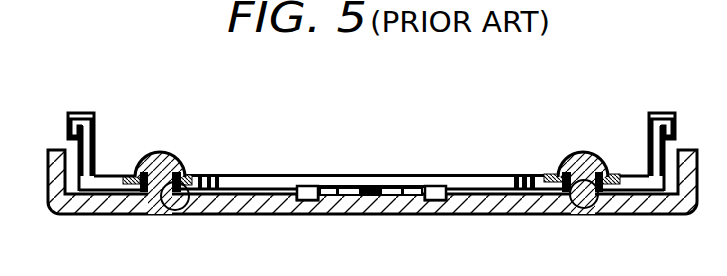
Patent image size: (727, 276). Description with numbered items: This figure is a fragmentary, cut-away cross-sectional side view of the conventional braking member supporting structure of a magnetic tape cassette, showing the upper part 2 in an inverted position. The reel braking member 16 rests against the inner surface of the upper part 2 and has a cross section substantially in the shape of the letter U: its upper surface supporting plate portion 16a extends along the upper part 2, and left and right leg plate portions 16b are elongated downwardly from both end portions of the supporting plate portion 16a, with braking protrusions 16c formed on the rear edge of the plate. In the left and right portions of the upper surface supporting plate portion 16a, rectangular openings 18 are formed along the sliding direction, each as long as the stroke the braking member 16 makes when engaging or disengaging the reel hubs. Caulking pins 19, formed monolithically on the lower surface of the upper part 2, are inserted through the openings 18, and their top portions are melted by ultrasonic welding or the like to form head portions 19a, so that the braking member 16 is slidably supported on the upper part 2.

The upper part 2 is at (383, 215).
The reel braking member 16 is at (359, 174).
The upper surface supporting plate portion 16a is at (282, 176).
The leg plate portions 16b is at (79, 156).
The braking protrusions 16c is at (82, 113).
The openings 18 is at (178, 210).
The caulking pins 19 is at (172, 166).
The head portions 19a is at (157, 153).